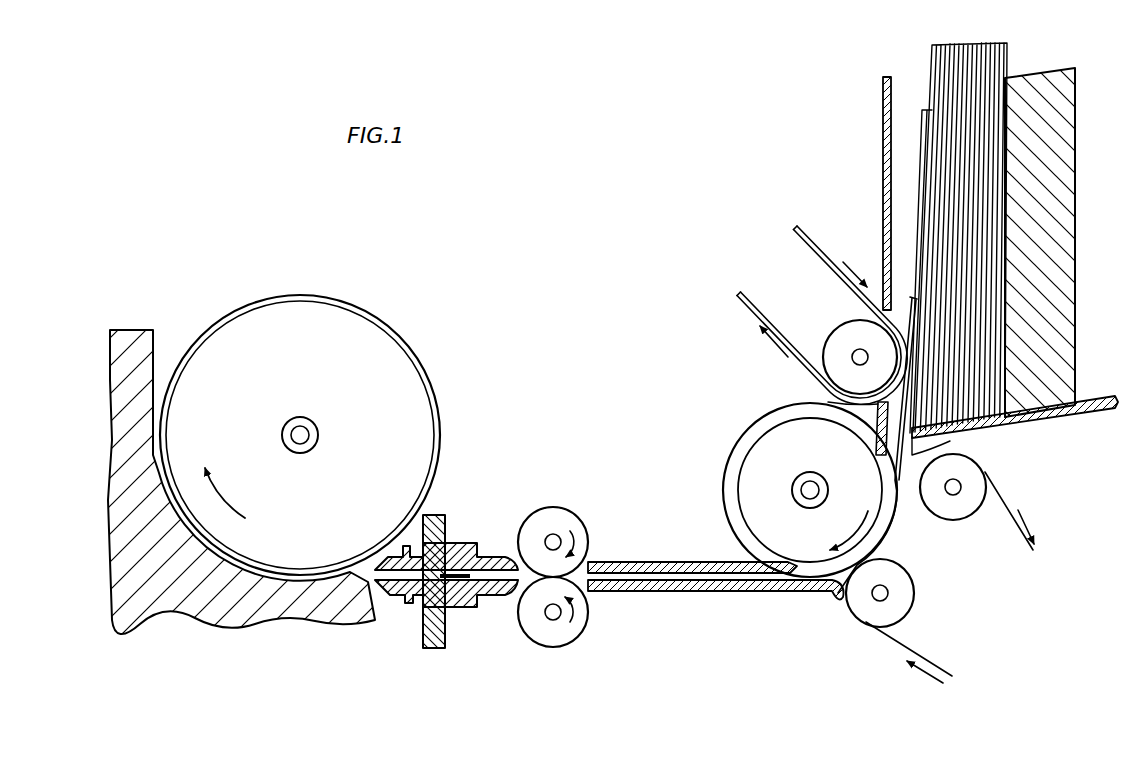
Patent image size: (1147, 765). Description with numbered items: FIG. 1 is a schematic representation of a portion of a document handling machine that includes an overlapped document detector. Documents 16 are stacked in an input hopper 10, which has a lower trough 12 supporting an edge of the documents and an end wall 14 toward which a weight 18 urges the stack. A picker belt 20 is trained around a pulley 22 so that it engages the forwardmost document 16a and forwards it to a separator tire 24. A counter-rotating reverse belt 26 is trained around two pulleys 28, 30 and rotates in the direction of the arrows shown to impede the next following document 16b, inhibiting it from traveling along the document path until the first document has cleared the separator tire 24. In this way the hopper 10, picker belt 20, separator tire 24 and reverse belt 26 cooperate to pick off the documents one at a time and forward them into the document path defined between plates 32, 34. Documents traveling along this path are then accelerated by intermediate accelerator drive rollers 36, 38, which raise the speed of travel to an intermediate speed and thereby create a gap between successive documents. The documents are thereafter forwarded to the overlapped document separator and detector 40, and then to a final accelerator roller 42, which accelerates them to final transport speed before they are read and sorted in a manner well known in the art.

The input hopper 10 is at (1084, 252).
The lower trough 12 is at (1097, 403).
The end wall 14 is at (883, 160).
The documents 16 is at (965, 44).
The forwardmost document 16a is at (829, 402).
The next following document 16b is at (950, 441).
The weight 18 is at (1077, 172).
The picker belt 20 is at (838, 276).
The pulley 22 is at (836, 333).
The separator tire 24 is at (753, 426).
The counter-rotating reverse belt 26 is at (1019, 531).
The pulley 28 is at (961, 521).
The pulley 30 is at (914, 606).
The plate 32 is at (712, 561).
The plate 34 is at (750, 591).
The intermediate accelerator drive roller 36 is at (556, 647).
The intermediate accelerator drive roller 38 is at (560, 507).
The overlapped document separator and detector 40 is at (472, 521).
The final accelerator roller 42 is at (397, 333).